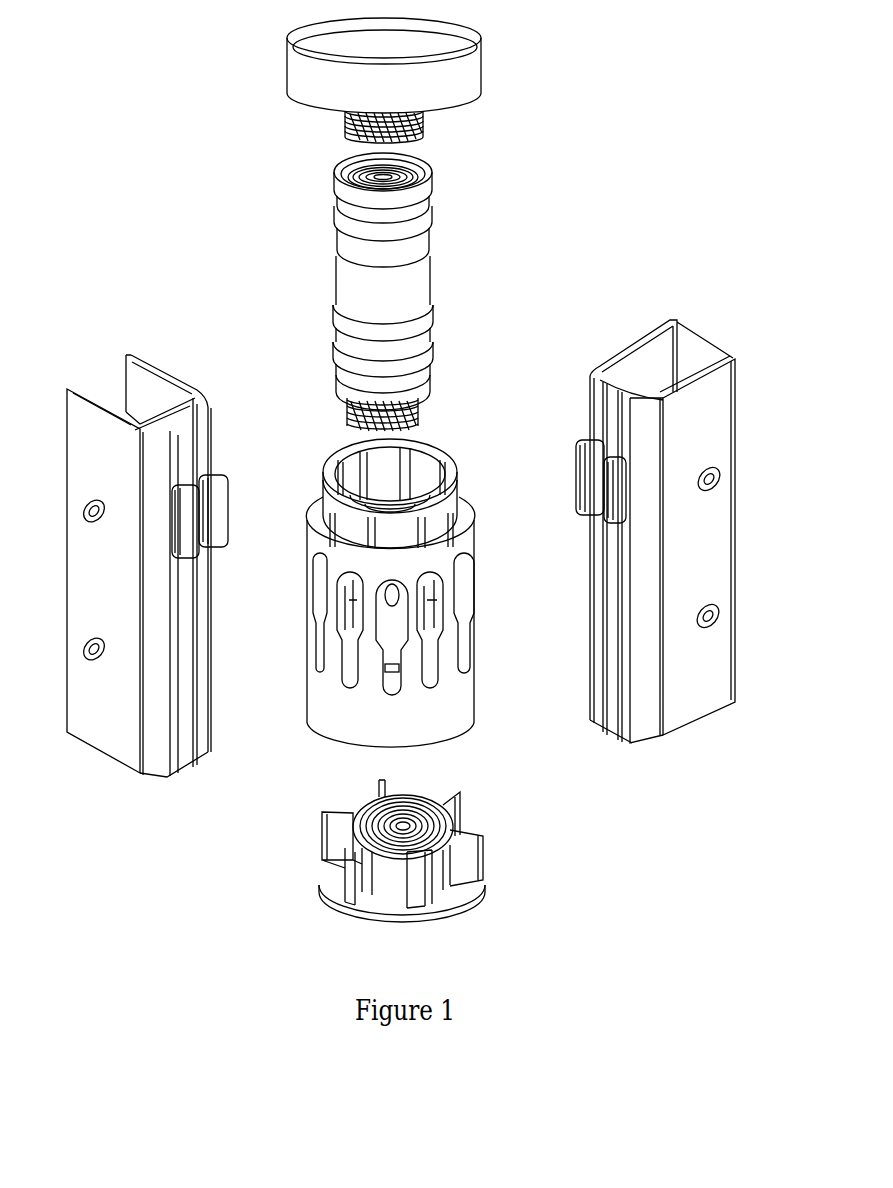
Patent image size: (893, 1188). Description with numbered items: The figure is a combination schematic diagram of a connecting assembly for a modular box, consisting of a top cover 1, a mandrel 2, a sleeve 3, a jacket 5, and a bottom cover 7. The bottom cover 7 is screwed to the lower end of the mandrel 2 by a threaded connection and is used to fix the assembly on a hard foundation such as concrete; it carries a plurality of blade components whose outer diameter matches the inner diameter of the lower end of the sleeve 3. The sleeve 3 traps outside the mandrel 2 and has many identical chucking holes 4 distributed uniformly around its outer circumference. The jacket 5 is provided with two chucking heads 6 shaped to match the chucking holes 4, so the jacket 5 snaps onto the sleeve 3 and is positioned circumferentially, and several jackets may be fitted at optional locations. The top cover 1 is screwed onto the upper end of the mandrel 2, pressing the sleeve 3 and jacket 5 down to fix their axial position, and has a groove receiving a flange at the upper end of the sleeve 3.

The top cover 1 is at (457, 80).
The mandrel 2 is at (415, 302).
The sleeve 3 is at (450, 478).
The chucking hole 4 is at (437, 630).
The jacket 5 is at (674, 528).
The chucking head 6 is at (632, 530).
The bottom cover 7 is at (468, 860).